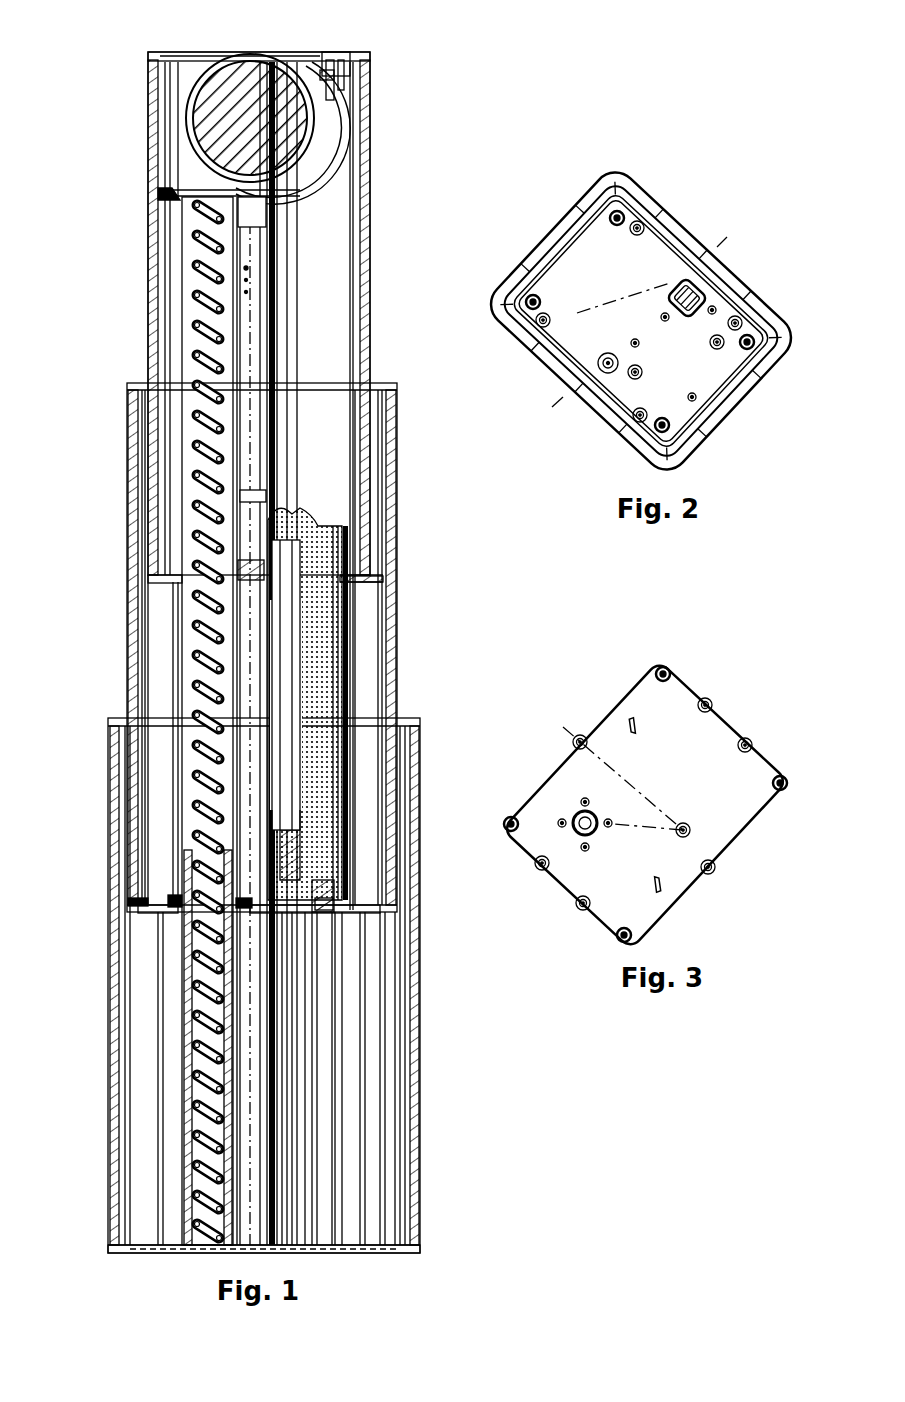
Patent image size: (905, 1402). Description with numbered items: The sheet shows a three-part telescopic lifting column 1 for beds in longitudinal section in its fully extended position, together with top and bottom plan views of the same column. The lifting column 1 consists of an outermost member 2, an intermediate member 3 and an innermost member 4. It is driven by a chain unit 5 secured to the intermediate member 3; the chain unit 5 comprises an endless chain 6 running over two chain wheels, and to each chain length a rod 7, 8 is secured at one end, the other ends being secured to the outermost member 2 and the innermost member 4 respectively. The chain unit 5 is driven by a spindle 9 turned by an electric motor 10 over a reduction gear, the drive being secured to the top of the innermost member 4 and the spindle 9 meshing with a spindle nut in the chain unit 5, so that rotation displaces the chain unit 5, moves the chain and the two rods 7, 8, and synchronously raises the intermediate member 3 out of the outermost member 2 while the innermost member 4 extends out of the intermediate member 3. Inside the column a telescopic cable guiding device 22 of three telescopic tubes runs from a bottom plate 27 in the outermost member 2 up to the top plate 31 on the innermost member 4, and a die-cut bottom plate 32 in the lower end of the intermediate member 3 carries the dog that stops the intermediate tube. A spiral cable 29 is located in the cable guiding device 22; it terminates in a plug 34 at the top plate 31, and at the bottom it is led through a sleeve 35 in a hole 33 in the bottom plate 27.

In FIG. 1, the telescopic lifting column 1 is at (92, 79).
In FIG. 1, the outermost member 2 is at (115, 997).
In FIG. 1, the intermediate member 3 is at (130, 550).
In FIG. 1, the innermost member 4 is at (155, 275).
In FIG. 1, the chain unit 5 is at (330, 520).
In FIG. 1, the endless chain 6 is at (318, 683).
In FIG. 1, the rod 7 is at (287, 1092).
In FIG. 1, the rod 8 is at (292, 348).
In FIG. 1, the spindle 9 is at (252, 305).
In FIG. 1, the electric motor 10 is at (245, 78).
In FIG. 1, the telescopic cable guiding device 22 is at (172, 676).
In FIG. 1, the bottom plate 27 is at (132, 1263).
In FIG. 3, the bottom plate 27 is at (713, 803).
In FIG. 1, the spiral cable 29 is at (178, 355).
In FIG. 1, the top plate 31 is at (195, 55).
In FIG. 2, the top plate 31 is at (657, 250).
In FIG. 1, the die-cut bottom plate 32 is at (128, 913).
In FIG. 3, the hole 33 is at (577, 817).
In FIG. 2, the plug 34 is at (703, 297).
In FIG. 3, the sleeve 35 is at (577, 835).